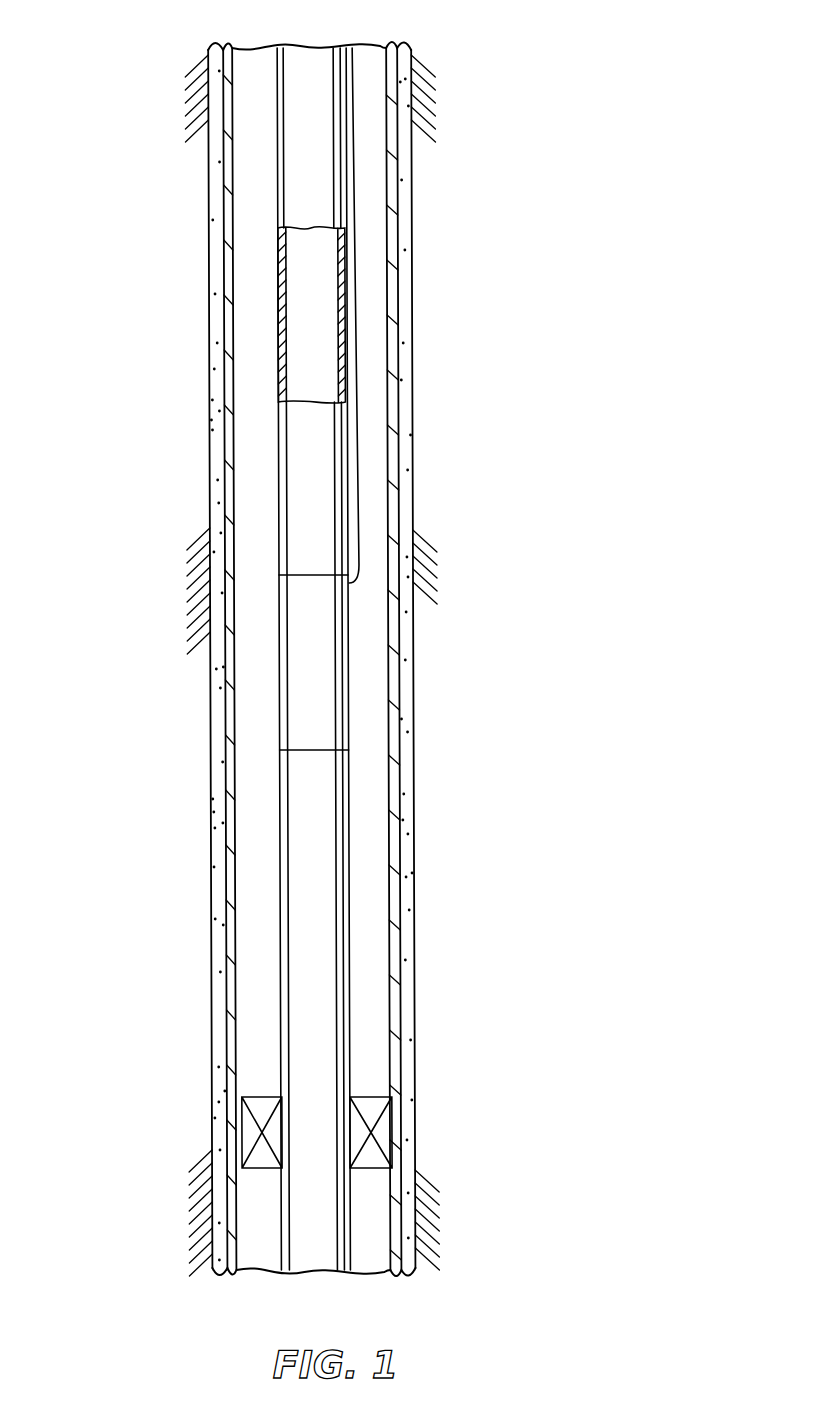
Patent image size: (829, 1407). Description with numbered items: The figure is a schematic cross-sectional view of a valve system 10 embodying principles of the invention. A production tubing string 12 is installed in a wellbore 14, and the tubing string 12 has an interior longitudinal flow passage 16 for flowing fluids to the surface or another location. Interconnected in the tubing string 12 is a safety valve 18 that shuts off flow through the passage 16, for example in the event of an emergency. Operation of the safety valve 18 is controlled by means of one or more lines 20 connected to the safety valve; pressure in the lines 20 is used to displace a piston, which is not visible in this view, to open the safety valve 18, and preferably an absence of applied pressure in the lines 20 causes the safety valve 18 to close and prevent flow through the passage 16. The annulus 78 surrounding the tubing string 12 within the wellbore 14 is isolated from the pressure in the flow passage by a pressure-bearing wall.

The valve system 10 is at (602, 116).
The production tubing string 12 is at (262, 152).
The wellbore 14 is at (403, 820).
The interior longitudinal flow passage 16 is at (282, 298).
The safety valve 18 is at (348, 684).
The lines 20 is at (360, 312).
The annulus 78 is at (262, 672).